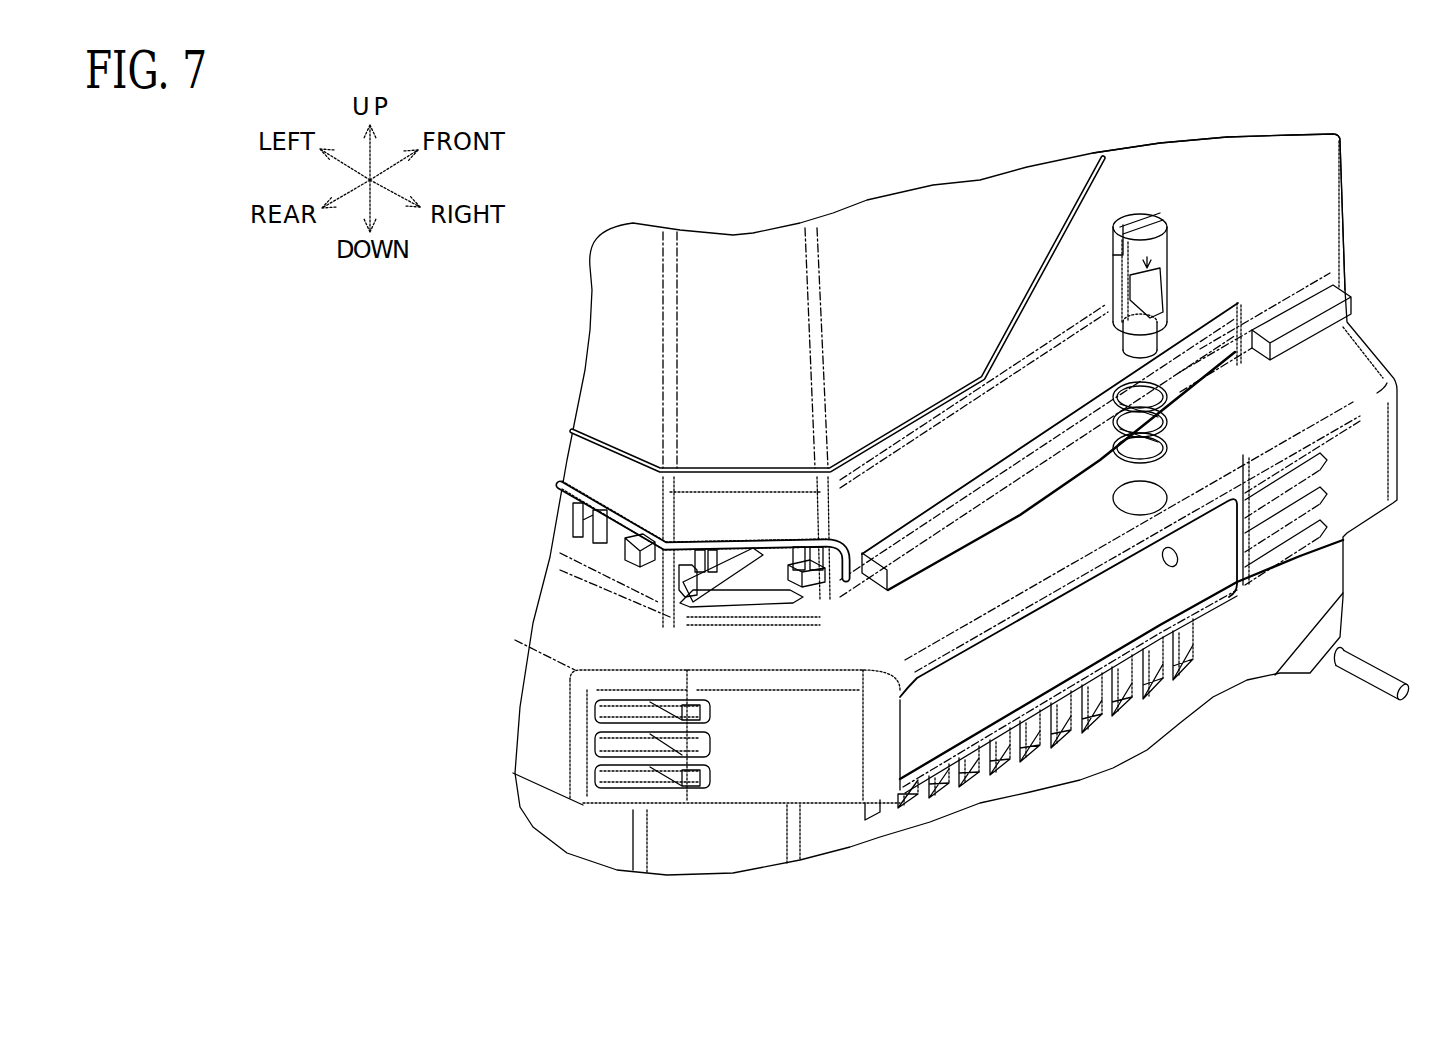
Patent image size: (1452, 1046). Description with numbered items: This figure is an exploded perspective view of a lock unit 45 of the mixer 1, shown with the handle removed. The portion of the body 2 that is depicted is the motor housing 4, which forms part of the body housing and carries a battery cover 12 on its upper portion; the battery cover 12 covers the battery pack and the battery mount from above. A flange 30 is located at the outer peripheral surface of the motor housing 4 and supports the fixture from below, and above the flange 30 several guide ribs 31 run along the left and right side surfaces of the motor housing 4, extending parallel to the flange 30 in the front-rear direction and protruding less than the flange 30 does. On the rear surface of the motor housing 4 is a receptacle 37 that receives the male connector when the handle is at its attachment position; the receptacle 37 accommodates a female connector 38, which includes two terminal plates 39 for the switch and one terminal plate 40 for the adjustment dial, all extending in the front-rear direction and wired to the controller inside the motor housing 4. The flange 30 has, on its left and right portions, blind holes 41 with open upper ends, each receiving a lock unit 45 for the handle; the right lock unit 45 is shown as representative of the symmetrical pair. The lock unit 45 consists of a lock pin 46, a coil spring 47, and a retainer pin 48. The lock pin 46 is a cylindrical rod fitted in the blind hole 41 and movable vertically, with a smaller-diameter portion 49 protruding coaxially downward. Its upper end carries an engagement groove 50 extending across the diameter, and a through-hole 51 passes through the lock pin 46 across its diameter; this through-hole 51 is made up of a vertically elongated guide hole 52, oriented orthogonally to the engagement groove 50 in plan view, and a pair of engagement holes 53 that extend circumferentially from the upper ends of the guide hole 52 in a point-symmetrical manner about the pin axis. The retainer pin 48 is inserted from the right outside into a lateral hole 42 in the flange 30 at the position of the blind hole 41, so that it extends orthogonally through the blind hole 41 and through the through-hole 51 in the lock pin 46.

The mixer 1 is at (932, 150).
The body 2 is at (1345, 178).
The motor housing 4 is at (1246, 155).
The battery cover 12 is at (742, 262).
The flange 30 is at (1365, 364).
The guide ribs 31 is at (1352, 297).
The receptacle 37 is at (613, 538).
The female connector 38 is at (750, 587).
The terminal plates 39 is at (627, 567).
The terminal plate 40 is at (800, 587).
The blind holes 41 is at (1153, 493).
The lateral hole 42 is at (1177, 560).
The lock unit 45 is at (1073, 340).
The lock pin 46 is at (1165, 245).
The coil spring 47 is at (1168, 441).
The retainer pin 48 is at (1381, 672).
The smaller-diameter portion 49 is at (1128, 340).
The engagement groove 50 is at (1140, 215).
The through-hole 51 is at (1160, 215).
The guide hole 52 is at (1160, 307).
The engagement holes 53 is at (1116, 258).